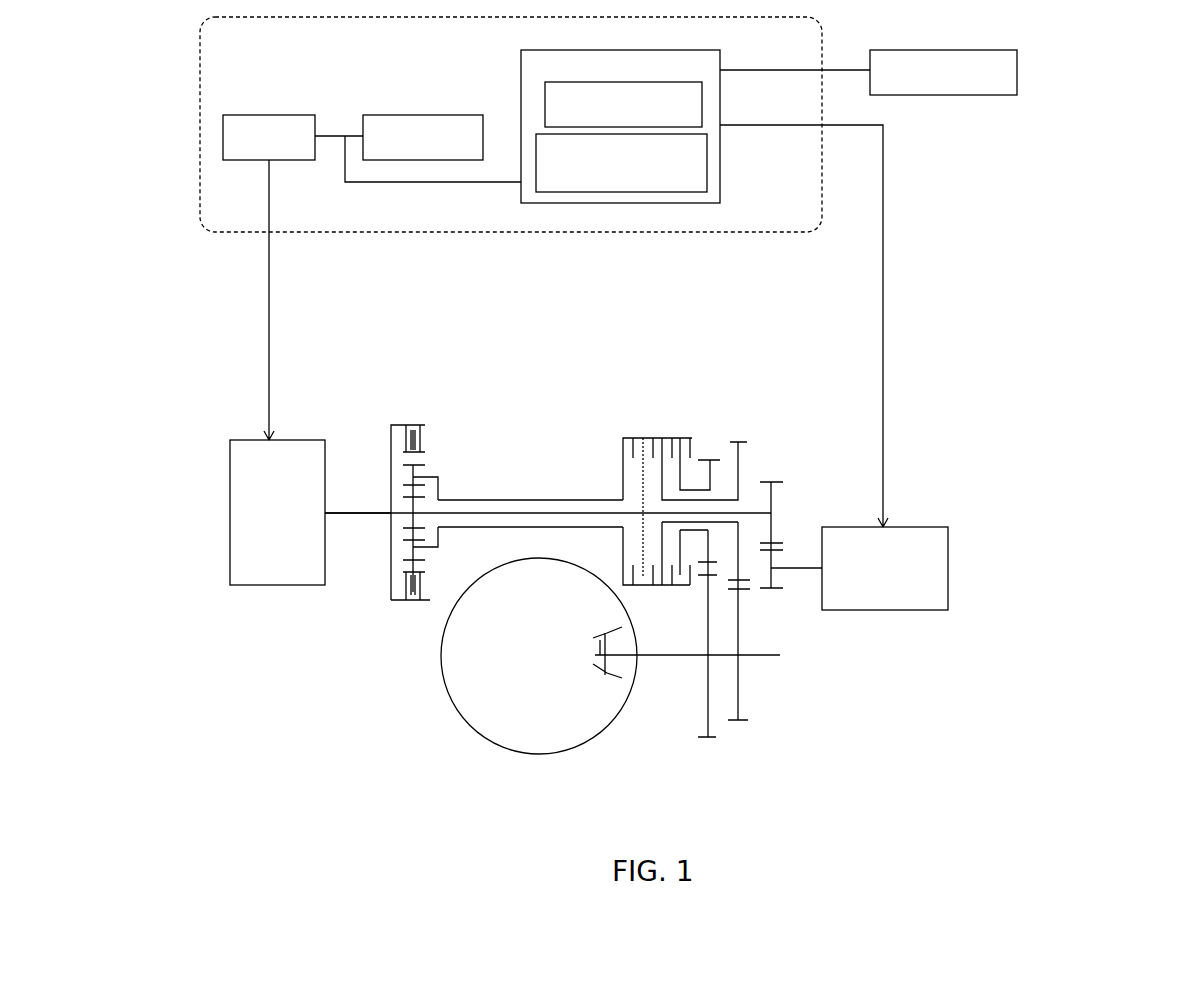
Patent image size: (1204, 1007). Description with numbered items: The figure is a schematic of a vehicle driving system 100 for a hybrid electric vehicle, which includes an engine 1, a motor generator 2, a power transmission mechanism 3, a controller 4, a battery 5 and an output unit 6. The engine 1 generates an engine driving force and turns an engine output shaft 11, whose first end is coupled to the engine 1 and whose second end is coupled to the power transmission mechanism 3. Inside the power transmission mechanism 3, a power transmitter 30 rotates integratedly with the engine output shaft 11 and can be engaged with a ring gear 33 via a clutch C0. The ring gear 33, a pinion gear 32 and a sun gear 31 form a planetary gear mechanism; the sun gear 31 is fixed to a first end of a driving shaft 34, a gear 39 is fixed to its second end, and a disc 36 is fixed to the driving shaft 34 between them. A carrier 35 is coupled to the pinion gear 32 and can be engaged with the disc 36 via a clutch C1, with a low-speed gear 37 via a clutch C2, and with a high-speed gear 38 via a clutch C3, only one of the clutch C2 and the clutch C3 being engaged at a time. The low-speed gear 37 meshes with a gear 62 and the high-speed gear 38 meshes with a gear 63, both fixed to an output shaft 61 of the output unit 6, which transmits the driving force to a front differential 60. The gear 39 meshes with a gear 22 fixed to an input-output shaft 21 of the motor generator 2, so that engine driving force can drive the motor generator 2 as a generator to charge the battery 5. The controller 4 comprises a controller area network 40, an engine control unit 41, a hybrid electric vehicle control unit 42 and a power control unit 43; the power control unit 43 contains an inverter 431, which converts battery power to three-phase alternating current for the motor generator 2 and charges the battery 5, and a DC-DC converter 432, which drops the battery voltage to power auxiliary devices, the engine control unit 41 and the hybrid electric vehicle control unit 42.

The vehicle driving system 100 is at (1109, 99).
The engine 1 is at (270, 586).
The motor generator 2 is at (905, 612).
The power transmission mechanism 3 is at (519, 332).
The controller 4 is at (200, 60).
The battery 5 is at (1017, 65).
The output unit 6 is at (837, 749).
The engine output shaft 11 is at (355, 516).
The input-output shaft 21 is at (800, 568).
The gear 22 is at (771, 572).
The power transmitter 30 is at (395, 602).
The sun gear 31 is at (393, 499).
The pinion gear 32 is at (425, 472).
The ring gear 33 is at (425, 446).
The driving shaft 34 is at (580, 506).
The carrier 35 is at (522, 498).
The disc 36 is at (633, 548).
The low-speed gear 37 is at (715, 458).
The high-speed gear 38 is at (743, 462).
The gear 39 is at (772, 500).
The controller area network 40 is at (344, 123).
The engine control unit 41 is at (272, 115).
The hybrid electric vehicle control unit 42 is at (427, 115).
The power control unit 43 is at (720, 60).
The inverter 431 is at (702, 107).
The DC-DC converter 432 is at (707, 165).
The front differential 60 is at (598, 737).
The output shaft 61 is at (672, 658).
The gear 62 is at (713, 718).
The gear 63 is at (740, 690).
The clutch C0 is at (417, 411).
The clutch C1 is at (646, 421).
The clutch C2 is at (690, 427).
The clutch C3 is at (671, 423).